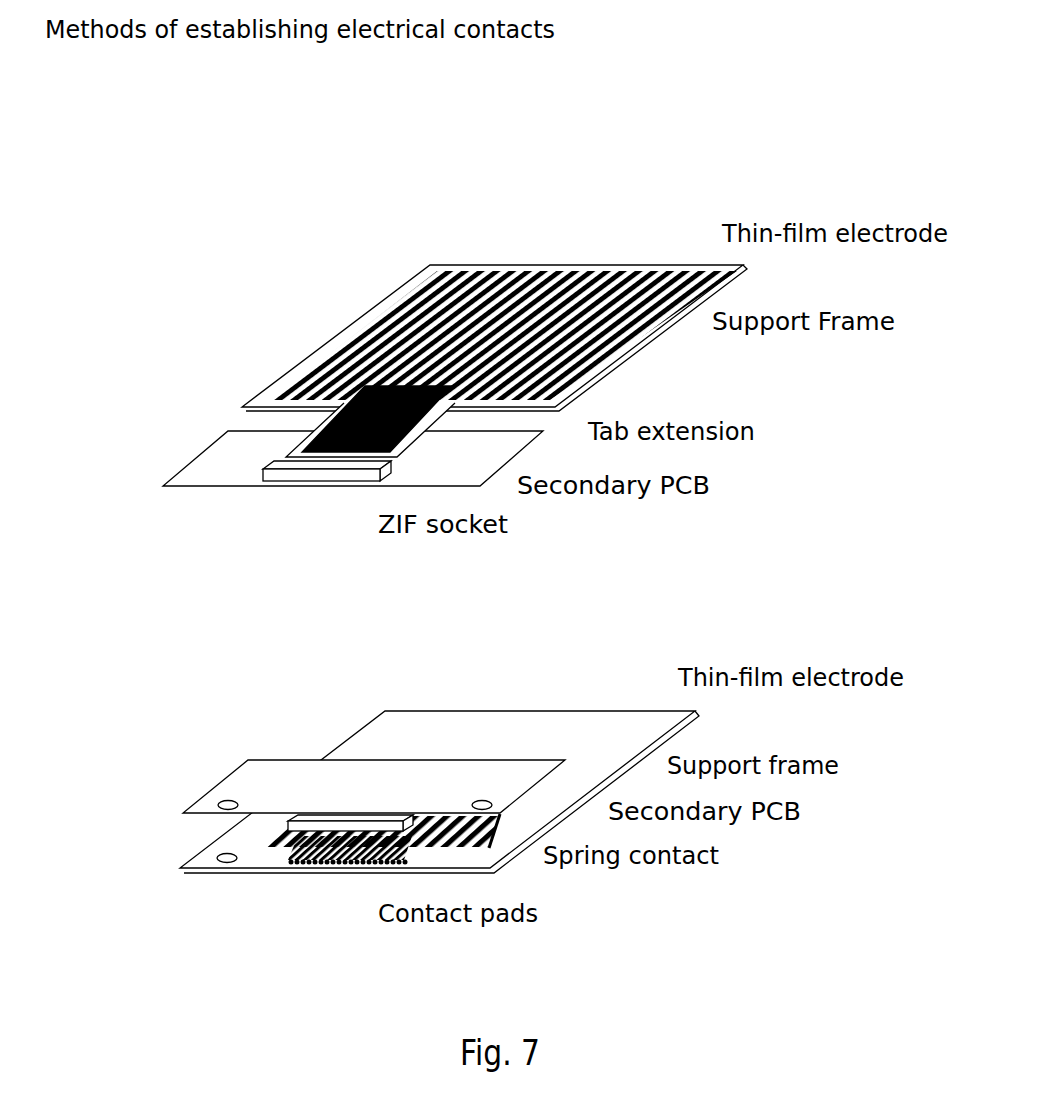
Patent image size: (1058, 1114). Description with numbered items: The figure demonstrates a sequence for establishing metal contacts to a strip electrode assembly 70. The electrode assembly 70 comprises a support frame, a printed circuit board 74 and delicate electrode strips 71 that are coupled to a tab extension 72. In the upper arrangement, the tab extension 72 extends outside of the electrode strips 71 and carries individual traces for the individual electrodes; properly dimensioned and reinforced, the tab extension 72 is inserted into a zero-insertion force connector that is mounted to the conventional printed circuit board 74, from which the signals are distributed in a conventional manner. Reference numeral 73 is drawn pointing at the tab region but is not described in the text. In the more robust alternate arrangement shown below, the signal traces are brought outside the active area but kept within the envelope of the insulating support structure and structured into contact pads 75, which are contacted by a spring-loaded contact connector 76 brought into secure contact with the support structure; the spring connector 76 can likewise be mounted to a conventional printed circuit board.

The strip electrode assembly 70 is at (213, 578).
The electrode strips 71 is at (400, 298).
The tab extension 72 is at (343, 323).
The tab extension 73 is at (320, 423).
The printed circuit board 74 is at (178, 470).
The contact pads 75 is at (343, 875).
The spring-loaded contact connector 76 is at (278, 858).